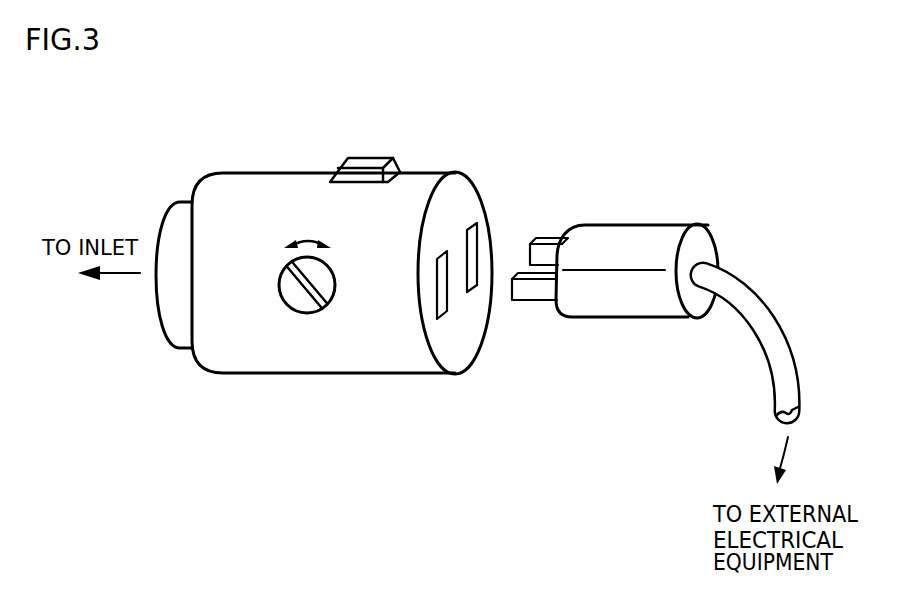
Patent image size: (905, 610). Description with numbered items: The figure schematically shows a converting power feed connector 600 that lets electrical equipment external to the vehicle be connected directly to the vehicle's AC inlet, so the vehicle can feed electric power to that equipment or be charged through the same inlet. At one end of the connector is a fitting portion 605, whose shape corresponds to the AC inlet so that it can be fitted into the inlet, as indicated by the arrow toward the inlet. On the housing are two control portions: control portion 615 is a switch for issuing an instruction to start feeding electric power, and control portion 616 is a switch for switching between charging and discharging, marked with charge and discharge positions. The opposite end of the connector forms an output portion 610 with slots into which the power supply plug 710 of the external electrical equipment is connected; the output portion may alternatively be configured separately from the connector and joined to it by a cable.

The power feed connector 600 is at (338, 96).
The fitting portion 605 is at (183, 349).
The output portion 610 is at (460, 190).
The control portion 615 is at (375, 157).
The control portion 616 is at (308, 314).
The power supply plug 710 is at (673, 224).